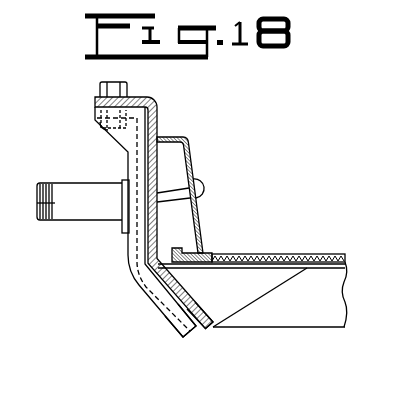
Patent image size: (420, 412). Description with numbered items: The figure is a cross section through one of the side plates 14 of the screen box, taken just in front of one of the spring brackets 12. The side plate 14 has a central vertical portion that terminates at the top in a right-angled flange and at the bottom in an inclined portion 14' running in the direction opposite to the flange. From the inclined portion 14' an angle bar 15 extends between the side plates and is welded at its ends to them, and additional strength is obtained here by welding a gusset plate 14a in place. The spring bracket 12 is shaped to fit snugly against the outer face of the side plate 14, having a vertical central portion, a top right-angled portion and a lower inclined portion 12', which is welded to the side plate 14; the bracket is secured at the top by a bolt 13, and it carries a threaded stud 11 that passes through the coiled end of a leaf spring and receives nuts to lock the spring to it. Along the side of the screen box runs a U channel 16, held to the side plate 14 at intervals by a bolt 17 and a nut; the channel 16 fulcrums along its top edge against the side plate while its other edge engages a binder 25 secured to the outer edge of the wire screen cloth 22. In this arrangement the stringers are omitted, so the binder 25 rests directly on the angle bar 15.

The threaded stud 11 is at (67, 214).
The spring bracket 12 is at (139, 222).
The lower inclined portion of spring bracket 12' is at (162, 329).
The bolt 13 is at (100, 90).
The side plate 14 is at (154, 208).
The inclined portion of side plate 14' is at (210, 340).
The gusset plate 14a is at (262, 297).
The angle bar 15 is at (315, 327).
The U channel 16 is at (186, 146).
The bolt 17 is at (201, 188).
The screen cloth 22 is at (300, 256).
The binder 25 is at (186, 245).